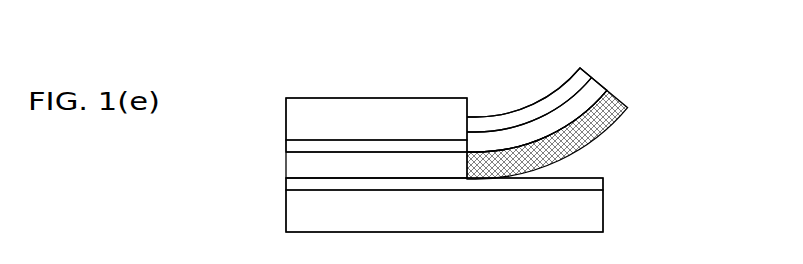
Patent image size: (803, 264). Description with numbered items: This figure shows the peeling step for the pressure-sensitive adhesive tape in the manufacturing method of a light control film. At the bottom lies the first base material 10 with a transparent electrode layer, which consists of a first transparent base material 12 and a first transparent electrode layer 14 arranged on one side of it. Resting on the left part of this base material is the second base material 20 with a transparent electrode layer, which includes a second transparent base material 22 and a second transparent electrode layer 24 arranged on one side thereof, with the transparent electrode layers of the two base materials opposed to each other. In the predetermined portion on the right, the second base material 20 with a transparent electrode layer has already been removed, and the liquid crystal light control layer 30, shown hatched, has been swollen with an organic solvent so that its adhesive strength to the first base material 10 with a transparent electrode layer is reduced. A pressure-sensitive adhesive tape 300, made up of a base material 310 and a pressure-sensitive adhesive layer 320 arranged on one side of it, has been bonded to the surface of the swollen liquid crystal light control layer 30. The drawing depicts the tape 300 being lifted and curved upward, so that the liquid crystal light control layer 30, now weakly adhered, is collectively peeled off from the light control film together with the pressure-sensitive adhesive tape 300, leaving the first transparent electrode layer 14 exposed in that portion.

The first base material with a transparent electrode layer 10 is at (660, 182).
The first transparent base material 12 is at (604, 212).
The first transparent electrode layer 14 is at (604, 186).
The second base material with a transparent electrode layer 20 is at (230, 100).
The second transparent base material 22 is at (287, 123).
The second transparent electrode layer 24 is at (287, 143).
The liquid crystal light control layer 30 is at (616, 94).
The pressure-sensitive adhesive tape 300 is at (683, 5).
The base material 310 is at (590, 73).
The pressure-sensitive adhesive layer 320 is at (603, 85).